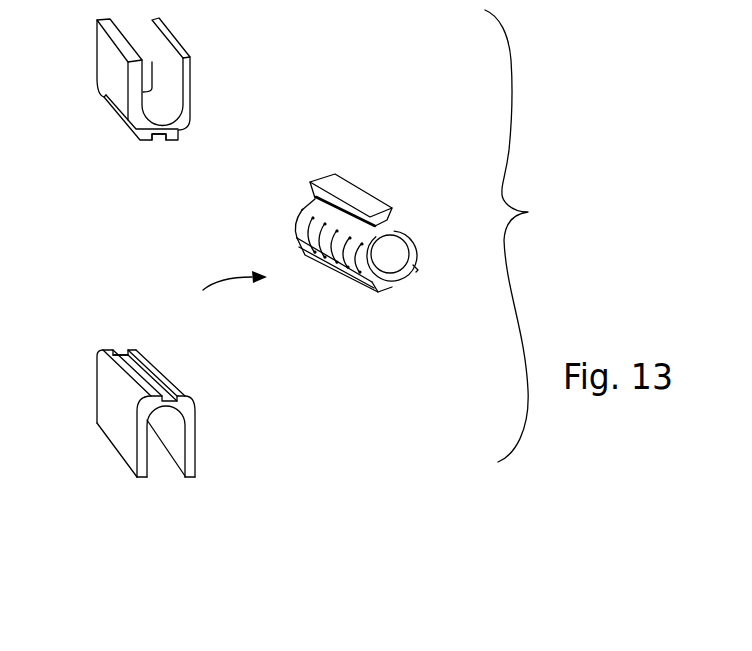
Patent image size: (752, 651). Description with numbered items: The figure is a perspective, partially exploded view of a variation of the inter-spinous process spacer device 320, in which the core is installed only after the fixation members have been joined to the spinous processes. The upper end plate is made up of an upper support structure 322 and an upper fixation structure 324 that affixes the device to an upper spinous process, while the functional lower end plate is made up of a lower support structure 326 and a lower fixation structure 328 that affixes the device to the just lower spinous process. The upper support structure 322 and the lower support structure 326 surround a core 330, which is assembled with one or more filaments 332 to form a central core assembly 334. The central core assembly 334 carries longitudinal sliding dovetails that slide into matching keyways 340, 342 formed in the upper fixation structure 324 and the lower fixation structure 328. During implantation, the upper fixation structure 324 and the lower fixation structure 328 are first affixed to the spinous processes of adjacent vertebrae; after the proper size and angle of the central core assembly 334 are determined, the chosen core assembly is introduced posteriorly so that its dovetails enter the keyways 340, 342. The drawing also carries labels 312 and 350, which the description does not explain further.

The device 320 is at (529, 212).
The cylindrical body 312 is at (300, 218).
The upper support structure 322 is at (300, 207).
The upper fixation structure 324 is at (191, 110).
The lower support structure 326 is at (380, 292).
The lower fixation structure 328 is at (197, 416).
The core 330 is at (395, 248).
The filaments 332 is at (355, 193).
The central core assembly 334 is at (209, 292).
The keyway 340 is at (157, 141).
The keyway 342 is at (128, 352).
The lower rail 350 is at (403, 289).